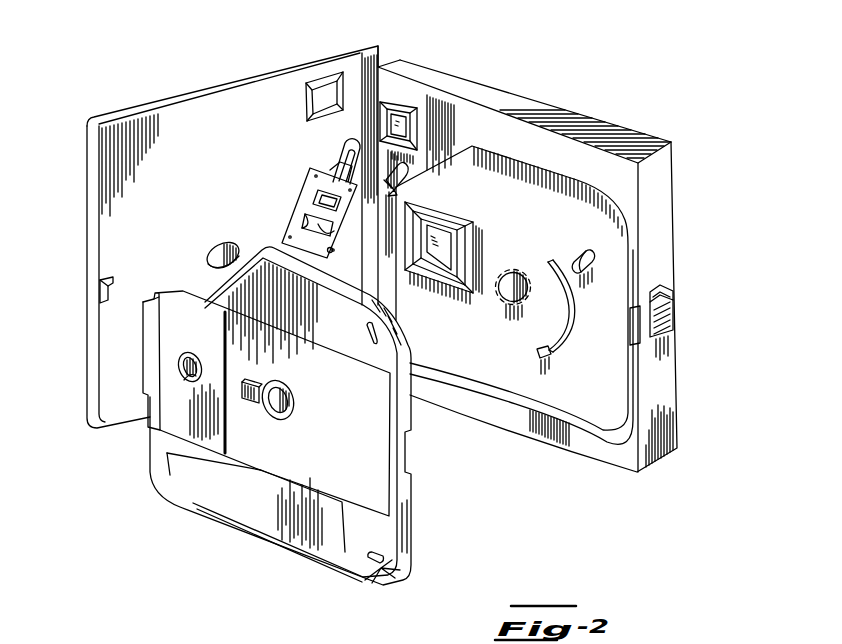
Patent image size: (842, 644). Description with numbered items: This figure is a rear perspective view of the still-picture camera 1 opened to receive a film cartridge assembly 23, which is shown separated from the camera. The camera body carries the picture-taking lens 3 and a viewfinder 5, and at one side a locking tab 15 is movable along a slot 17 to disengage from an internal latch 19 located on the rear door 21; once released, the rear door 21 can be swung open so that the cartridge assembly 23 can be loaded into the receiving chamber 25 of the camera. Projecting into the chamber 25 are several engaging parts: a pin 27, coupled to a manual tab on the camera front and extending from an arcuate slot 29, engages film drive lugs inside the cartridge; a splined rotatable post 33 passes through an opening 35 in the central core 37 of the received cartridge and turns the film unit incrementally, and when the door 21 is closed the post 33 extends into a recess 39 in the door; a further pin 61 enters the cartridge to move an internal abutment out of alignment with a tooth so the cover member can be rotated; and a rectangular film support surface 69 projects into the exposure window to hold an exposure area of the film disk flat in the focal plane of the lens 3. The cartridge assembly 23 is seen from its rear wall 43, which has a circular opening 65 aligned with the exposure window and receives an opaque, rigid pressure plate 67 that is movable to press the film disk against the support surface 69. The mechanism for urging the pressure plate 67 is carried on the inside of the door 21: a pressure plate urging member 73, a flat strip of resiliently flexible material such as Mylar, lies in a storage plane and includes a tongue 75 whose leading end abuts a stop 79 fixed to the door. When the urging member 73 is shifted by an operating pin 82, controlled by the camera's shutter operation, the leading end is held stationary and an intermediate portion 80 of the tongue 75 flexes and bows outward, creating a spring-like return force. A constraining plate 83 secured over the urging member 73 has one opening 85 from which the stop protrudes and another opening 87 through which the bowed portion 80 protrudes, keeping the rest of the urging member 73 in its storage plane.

The still-picture camera 1 is at (538, 90).
The picture-taking lens 3 is at (450, 226).
The viewfinder 5 is at (405, 122).
The locking tab 15 is at (673, 299).
The slot 17 is at (664, 287).
The internal latch 19 is at (110, 300).
The rear door 21 is at (181, 105).
The film cartridge assembly 23 is at (246, 534).
The receiving chamber 25 is at (508, 383).
The pin 27 is at (549, 358).
The arcuate slot 29 is at (569, 334).
The splined rotatable post 33 is at (505, 301).
The opening 35 is at (277, 421).
The central core 37 is at (293, 418).
The recess 39 is at (212, 256).
The rear wall 43 is at (180, 456).
The pin 61 is at (580, 256).
The circular opening 65 is at (180, 367).
The pressure plate 67 is at (193, 381).
The film support surface 69 is at (452, 262).
The pressure plate urging member 73 is at (332, 156).
The tongue 75 is at (305, 222).
The stop 79 is at (322, 199).
The intermediate portion 80 is at (320, 226).
The operating pin 82 is at (402, 192).
The constraining plate 83 is at (300, 189).
The opening 85 is at (316, 195).
The opening 87 is at (319, 245).